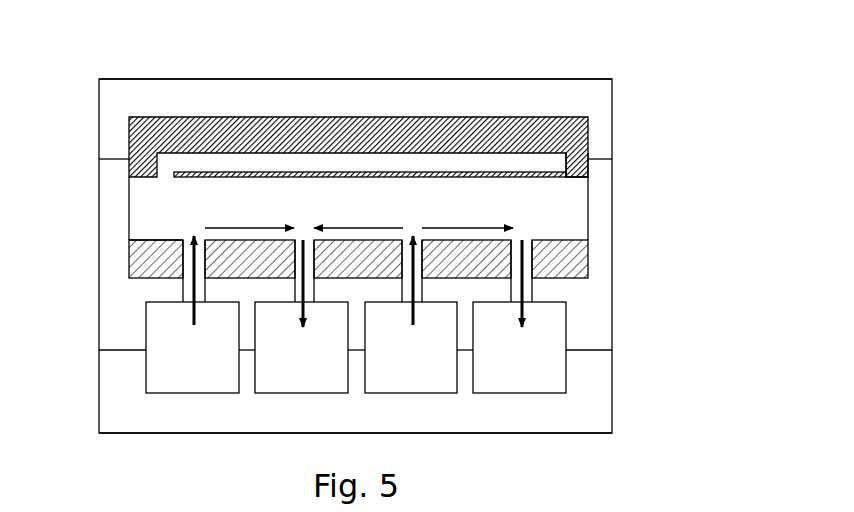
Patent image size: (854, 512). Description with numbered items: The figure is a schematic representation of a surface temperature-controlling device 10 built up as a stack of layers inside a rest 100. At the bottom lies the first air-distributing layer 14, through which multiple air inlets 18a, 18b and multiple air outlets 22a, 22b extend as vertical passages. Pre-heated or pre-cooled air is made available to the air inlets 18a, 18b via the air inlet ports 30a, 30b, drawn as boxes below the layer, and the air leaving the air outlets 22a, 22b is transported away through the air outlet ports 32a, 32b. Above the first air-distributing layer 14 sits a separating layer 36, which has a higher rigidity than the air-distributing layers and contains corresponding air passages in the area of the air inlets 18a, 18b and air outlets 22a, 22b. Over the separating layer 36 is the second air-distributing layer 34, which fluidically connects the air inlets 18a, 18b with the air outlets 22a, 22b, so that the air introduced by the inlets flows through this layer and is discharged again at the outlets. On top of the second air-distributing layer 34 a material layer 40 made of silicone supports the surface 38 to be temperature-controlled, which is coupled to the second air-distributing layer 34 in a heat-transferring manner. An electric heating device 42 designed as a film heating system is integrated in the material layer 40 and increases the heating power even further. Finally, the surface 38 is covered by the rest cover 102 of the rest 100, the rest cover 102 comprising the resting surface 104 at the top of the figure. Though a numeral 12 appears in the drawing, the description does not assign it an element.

The rest 100 is at (640, 68).
The resting surface 104 is at (405, 78).
The rest cover 102 is at (477, 95).
The surface temperature-controlling device 10 is at (365, 120).
The surface to be temperature-controlled 38 is at (163, 116).
The material layer 40 is at (590, 125).
The electric heating device 42 is at (168, 176).
The second air-distributing layer 34 is at (573, 205).
The separating layer 36 is at (573, 268).
The base body 12 is at (150, 268).
The first air-distributing layer 14 is at (112, 325).
The air inlet 18a is at (183, 290).
The air inlet 18b is at (433, 280).
The air outlet 22a is at (290, 285).
The air outlet 22b is at (532, 290).
The air inlet port 30a is at (192, 314).
The air inlet port 30b is at (411, 314).
The air outlet port 32a is at (301, 347).
The air outlet port 32b is at (519, 347).